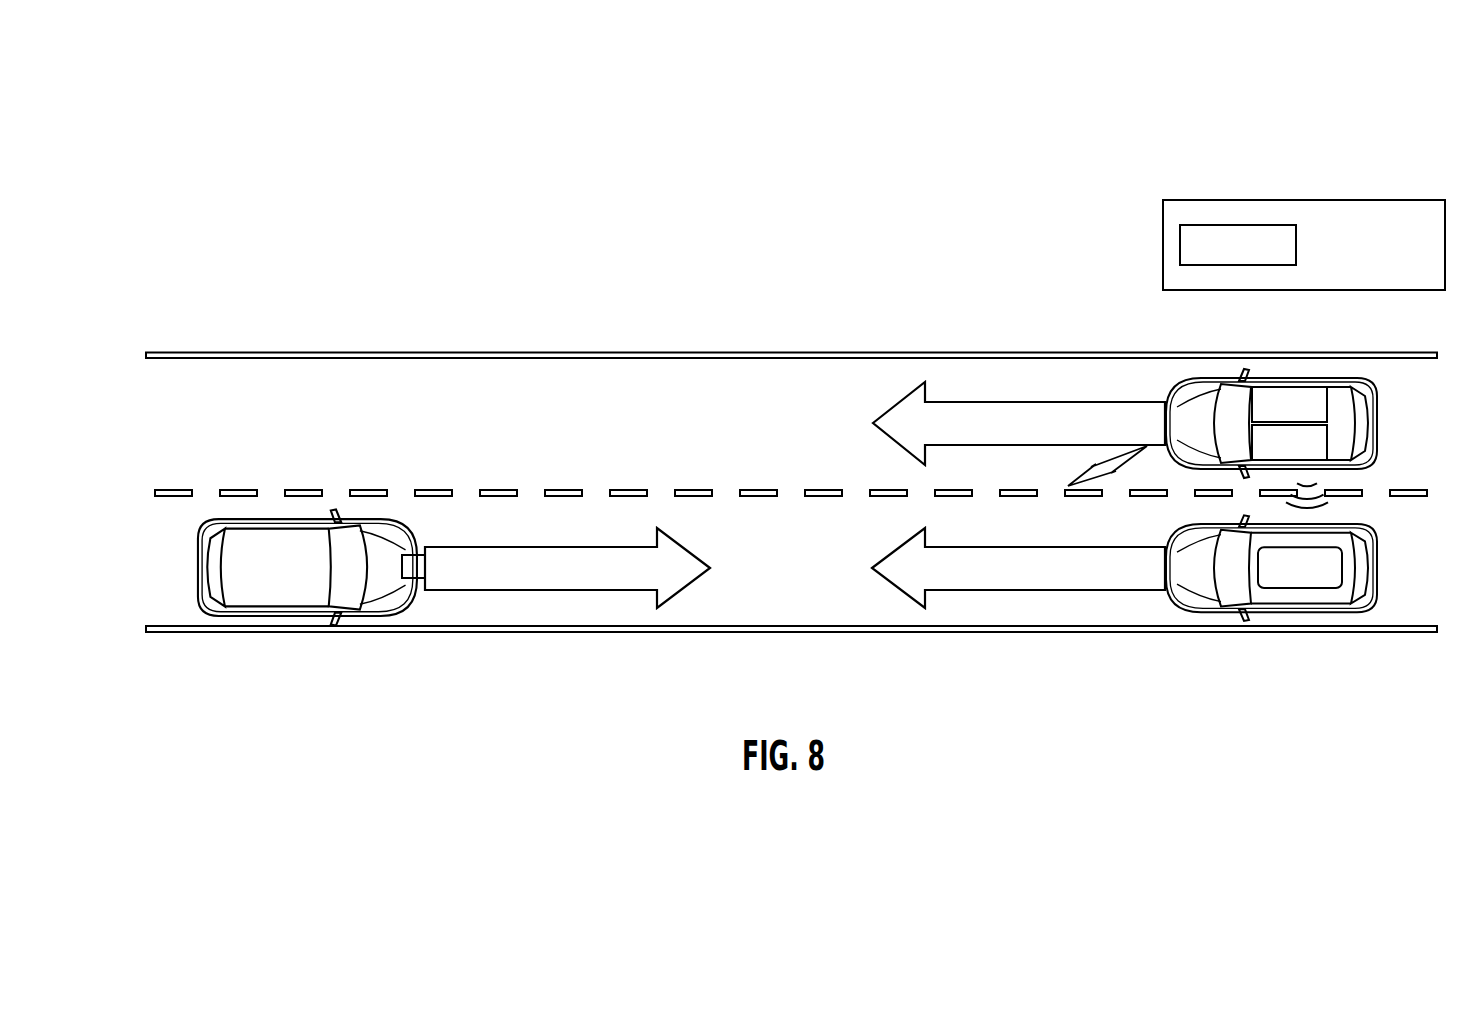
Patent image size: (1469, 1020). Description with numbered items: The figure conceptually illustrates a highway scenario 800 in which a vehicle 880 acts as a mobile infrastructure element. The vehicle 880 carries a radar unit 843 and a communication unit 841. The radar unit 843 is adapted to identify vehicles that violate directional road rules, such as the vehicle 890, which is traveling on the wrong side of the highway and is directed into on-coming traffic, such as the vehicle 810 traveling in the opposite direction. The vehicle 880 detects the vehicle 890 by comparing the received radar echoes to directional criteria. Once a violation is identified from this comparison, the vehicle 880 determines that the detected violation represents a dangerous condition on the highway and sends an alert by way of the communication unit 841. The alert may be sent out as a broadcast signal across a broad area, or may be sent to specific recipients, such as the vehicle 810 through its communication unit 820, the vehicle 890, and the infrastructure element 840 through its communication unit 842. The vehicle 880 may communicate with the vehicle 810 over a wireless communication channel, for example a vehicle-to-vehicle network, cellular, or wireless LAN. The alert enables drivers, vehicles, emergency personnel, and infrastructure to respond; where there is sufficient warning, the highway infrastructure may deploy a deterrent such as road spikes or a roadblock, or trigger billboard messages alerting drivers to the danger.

The driving scenario 800 is at (204, 130).
The vehicle 810 is at (277, 518).
The communication unit 820 is at (427, 566).
The infrastructure element 840 is at (1195, 200).
The communication unit 842 is at (1237, 225).
The vehicle 880 is at (1285, 388).
The communication unit 841 is at (1289, 404).
The radar unit 843 is at (1289, 442).
The vehicle 890 is at (1302, 612).